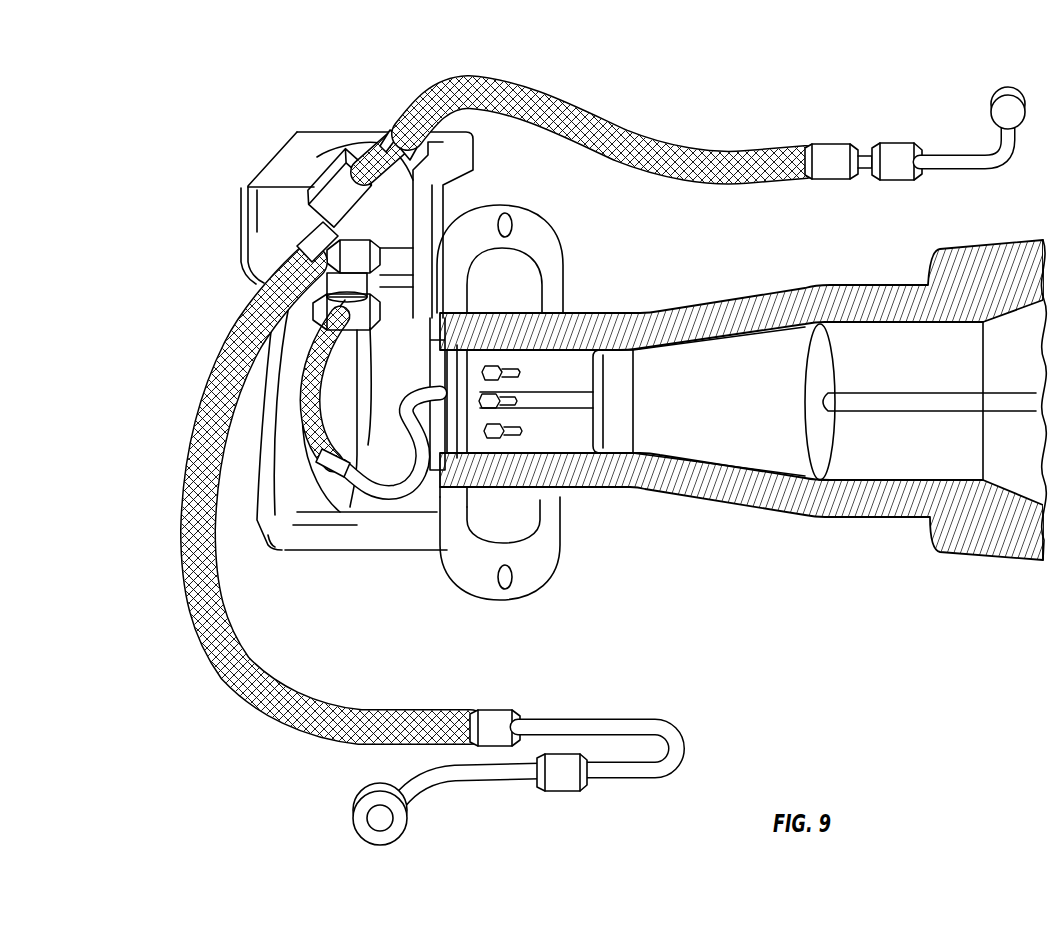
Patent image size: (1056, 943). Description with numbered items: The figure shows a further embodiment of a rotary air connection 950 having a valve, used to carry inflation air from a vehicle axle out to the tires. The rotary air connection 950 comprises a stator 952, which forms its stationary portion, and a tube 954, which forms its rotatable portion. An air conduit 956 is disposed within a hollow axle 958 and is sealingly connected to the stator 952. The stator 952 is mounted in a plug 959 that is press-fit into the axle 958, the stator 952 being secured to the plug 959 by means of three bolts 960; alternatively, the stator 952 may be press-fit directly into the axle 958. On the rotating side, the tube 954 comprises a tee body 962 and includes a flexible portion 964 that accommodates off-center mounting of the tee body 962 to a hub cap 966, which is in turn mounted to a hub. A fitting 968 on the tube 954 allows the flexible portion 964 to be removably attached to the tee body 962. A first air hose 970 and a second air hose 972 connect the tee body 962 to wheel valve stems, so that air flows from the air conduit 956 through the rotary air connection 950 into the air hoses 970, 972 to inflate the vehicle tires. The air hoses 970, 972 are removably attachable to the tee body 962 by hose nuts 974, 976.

The rotary air connection 950 is at (539, 359).
The stator 952 is at (434, 382).
The tube 954 is at (382, 490).
The air conduit 956 is at (948, 398).
The hollow axle 958 is at (890, 292).
The plug 959 is at (472, 436).
The bolts 960 is at (505, 362).
The tee body 962 is at (338, 192).
The flexible portion 964 is at (306, 395).
The hub cap 966 is at (258, 488).
The fitting 968 is at (367, 326).
The first air hose 970 is at (547, 112).
The second air hose 972 is at (262, 692).
The hose nut 974 is at (352, 172).
The hose nut 976 is at (308, 224).